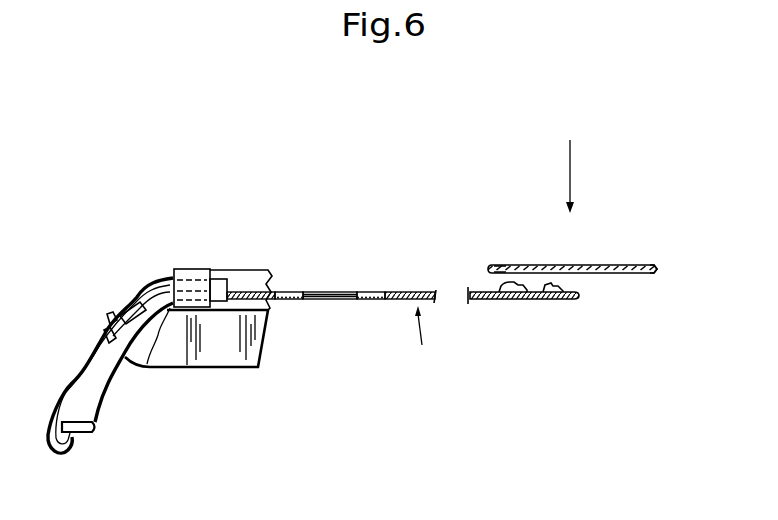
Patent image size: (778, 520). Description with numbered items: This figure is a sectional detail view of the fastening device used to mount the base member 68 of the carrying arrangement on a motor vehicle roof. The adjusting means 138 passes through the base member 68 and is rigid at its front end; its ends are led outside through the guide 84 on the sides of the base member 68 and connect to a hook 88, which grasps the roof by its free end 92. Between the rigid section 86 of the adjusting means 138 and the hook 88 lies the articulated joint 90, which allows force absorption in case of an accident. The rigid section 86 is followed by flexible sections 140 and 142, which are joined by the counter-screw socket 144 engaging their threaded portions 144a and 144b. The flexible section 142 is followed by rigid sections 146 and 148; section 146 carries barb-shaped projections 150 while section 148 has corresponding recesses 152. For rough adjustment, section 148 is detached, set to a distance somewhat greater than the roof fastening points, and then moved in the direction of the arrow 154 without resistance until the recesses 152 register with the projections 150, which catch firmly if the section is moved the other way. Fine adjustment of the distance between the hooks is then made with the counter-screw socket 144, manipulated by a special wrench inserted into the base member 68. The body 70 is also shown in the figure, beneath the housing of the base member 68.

The base member 68 is at (243, 280).
The body 70 is at (215, 353).
The guide 84 is at (146, 296).
The rigid section 86 is at (118, 304).
The hook 88 is at (63, 389).
The articulated joint 90 is at (110, 316).
The free end 92 is at (73, 437).
The adjusting means 138 is at (422, 343).
The flexible section 140 is at (258, 299).
The flexible section 142 is at (403, 288).
The counter-screw socket 144 is at (327, 287).
The threaded portion 144a is at (283, 292).
The threaded portion 144b is at (368, 300).
The rigid section 146 is at (532, 299).
The rigid section 148 is at (600, 266).
The projections 150 is at (497, 293).
The recesses 152 is at (502, 265).
The arrow 154 is at (662, 265).